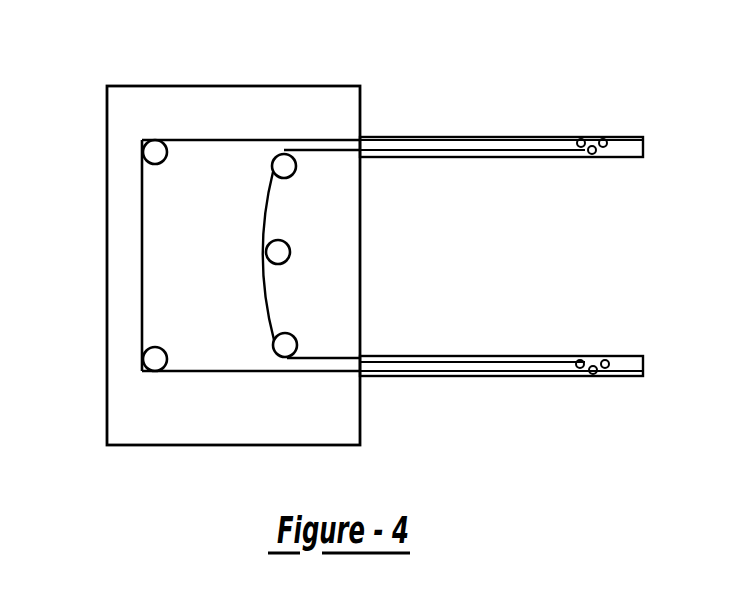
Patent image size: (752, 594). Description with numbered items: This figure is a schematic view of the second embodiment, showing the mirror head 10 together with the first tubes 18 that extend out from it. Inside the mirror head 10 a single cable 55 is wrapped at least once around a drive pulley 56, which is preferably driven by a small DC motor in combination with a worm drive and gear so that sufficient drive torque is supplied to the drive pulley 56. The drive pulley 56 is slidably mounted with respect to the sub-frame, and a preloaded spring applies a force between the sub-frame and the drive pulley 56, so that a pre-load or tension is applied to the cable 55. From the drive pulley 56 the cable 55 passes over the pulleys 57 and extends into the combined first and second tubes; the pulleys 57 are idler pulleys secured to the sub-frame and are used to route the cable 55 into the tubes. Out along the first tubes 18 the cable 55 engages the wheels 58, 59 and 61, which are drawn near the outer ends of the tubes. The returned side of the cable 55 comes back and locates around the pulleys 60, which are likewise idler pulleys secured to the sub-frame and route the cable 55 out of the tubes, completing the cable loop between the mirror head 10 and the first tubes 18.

The mirror head 10 is at (310, 85).
The first tubes 18 is at (523, 137).
The cable 55 is at (142, 240).
The drive pulley 56 is at (290, 250).
The pulleys 57 is at (296, 170).
The wheel 58 is at (582, 137).
The wheel 59 is at (607, 137).
The pulleys 60 is at (143, 150).
The wheel 61 is at (592, 157).